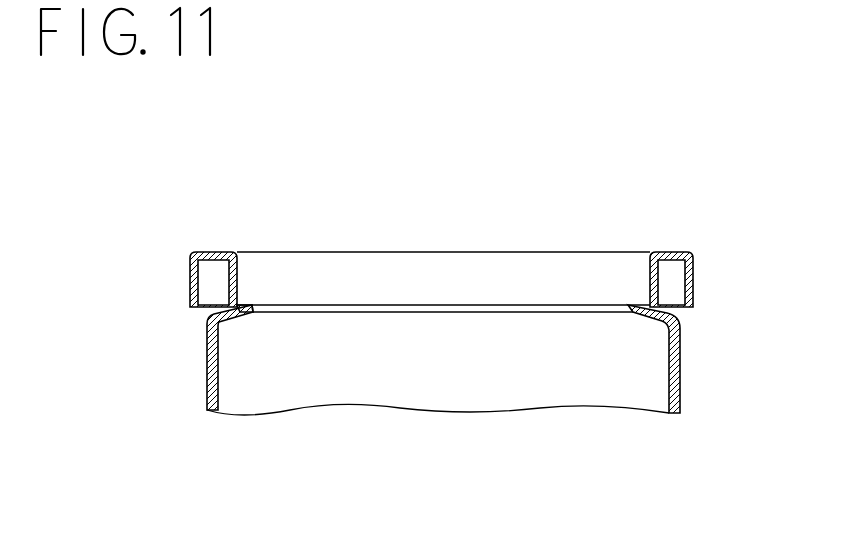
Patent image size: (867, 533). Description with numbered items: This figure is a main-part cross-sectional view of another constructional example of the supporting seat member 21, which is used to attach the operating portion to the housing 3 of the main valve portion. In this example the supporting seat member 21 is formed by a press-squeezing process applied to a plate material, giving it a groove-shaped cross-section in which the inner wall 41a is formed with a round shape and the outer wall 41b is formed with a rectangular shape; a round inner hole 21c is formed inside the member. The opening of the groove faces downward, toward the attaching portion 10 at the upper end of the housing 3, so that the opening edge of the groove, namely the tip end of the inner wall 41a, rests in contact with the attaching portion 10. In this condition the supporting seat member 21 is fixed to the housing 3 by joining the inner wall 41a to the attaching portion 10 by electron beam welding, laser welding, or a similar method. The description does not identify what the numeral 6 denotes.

The supporting seat member 21 is at (540, 267).
The inner hole 21c is at (643, 280).
The inner wall 41a is at (238, 277).
The outer wall 41b is at (195, 292).
The attaching portion 10 is at (245, 307).
The shell 6 is at (178, 373).
The housing 3 is at (690, 368).